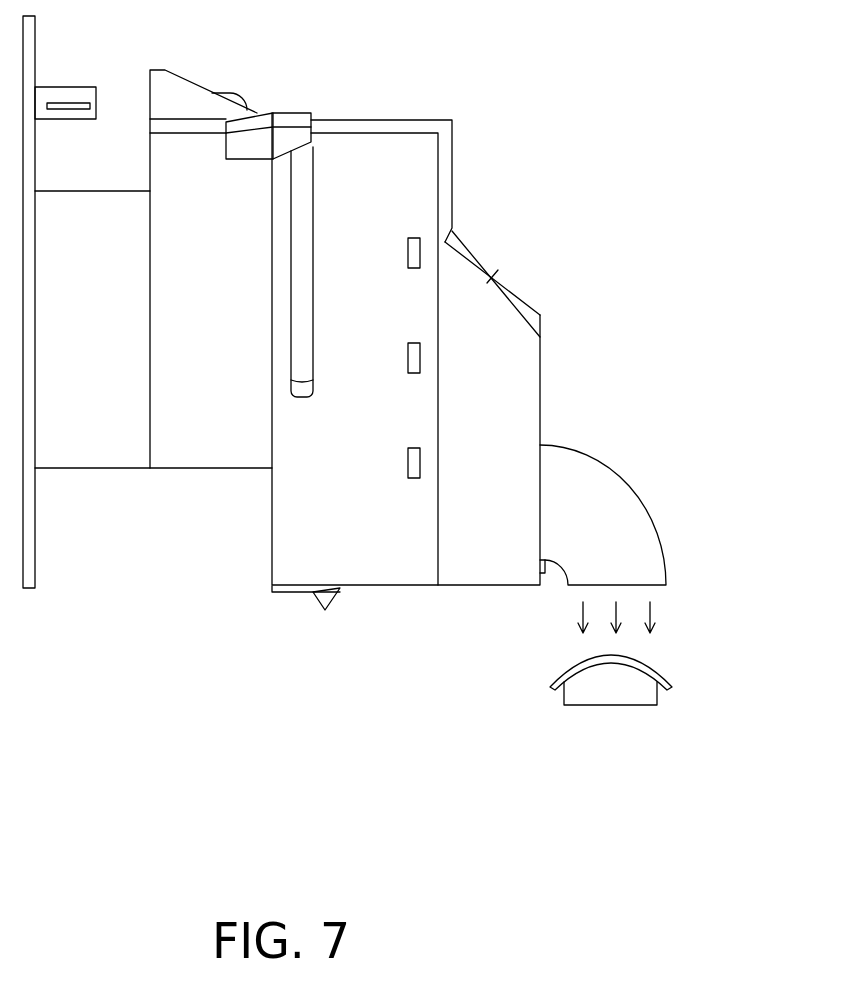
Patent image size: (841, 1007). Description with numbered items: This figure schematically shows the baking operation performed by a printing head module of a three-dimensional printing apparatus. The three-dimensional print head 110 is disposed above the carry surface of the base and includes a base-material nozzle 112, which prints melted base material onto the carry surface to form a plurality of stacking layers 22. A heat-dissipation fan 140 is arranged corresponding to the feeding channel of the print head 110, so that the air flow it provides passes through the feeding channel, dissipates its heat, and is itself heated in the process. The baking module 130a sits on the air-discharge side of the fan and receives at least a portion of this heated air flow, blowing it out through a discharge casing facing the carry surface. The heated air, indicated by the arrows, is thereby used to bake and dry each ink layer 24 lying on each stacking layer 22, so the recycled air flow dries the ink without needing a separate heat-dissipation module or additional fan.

The 3-D print head 110 is at (386, 150).
The heat-dissipation fan 140 is at (498, 270).
The baking module 130a is at (580, 507).
The base-material nozzle 112 is at (335, 597).
The ink layer 24 is at (558, 677).
The stacking layer 22 is at (575, 700).